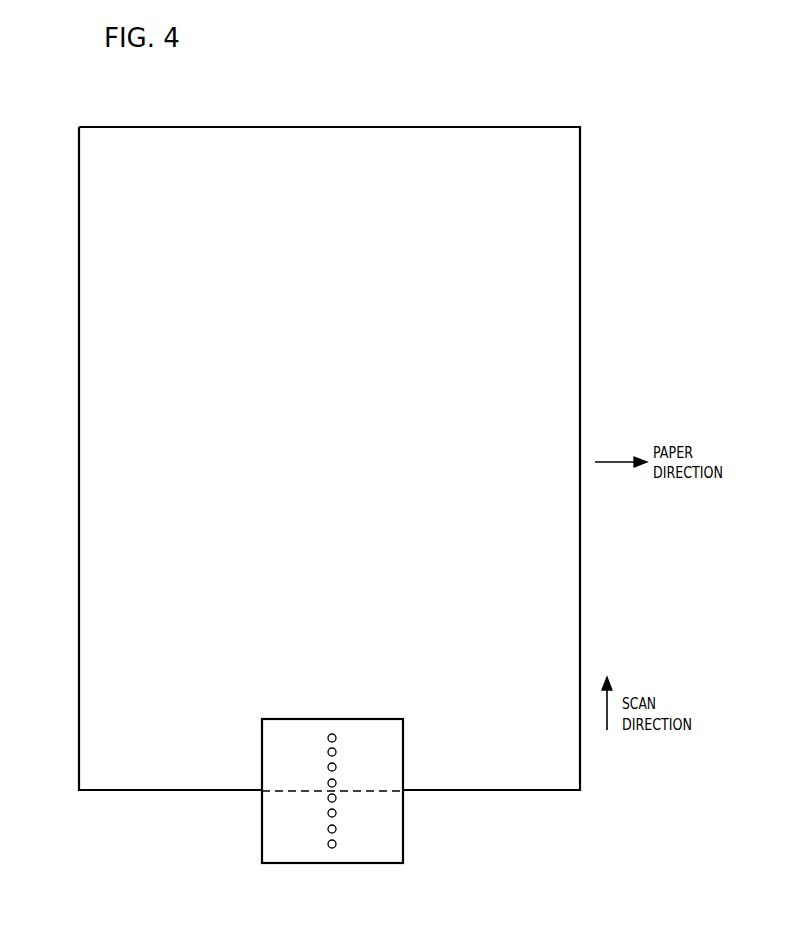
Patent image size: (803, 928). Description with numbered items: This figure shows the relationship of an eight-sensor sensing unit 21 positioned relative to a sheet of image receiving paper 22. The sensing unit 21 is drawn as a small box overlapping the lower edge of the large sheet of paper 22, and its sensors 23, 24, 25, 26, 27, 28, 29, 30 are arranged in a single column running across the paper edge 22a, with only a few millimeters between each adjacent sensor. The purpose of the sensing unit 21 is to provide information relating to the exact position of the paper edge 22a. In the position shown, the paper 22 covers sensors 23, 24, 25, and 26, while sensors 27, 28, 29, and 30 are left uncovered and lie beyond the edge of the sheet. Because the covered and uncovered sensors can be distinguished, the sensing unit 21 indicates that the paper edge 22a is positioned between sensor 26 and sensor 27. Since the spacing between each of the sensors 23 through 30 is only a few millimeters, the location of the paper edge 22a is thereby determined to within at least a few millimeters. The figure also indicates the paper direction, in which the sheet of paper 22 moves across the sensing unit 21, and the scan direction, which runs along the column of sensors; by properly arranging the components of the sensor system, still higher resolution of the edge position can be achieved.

The sensing unit 21 is at (362, 727).
The paper 22 is at (92, 281).
The paper edge 22a is at (143, 791).
The sensor 23 is at (327, 738).
The sensor 24 is at (337, 752).
The sensor 25 is at (327, 767).
The sensor 26 is at (337, 782).
The sensor 27 is at (327, 798).
The sensor 28 is at (337, 814).
The sensor 29 is at (327, 829).
The sensor 30 is at (337, 845).